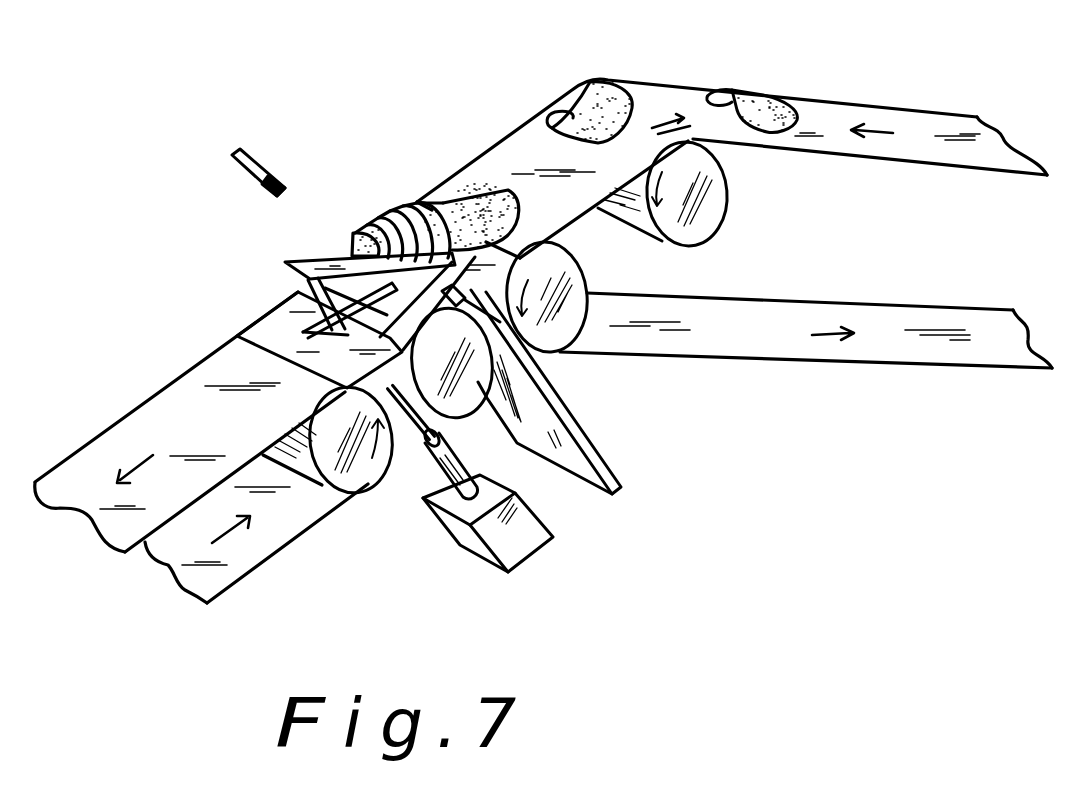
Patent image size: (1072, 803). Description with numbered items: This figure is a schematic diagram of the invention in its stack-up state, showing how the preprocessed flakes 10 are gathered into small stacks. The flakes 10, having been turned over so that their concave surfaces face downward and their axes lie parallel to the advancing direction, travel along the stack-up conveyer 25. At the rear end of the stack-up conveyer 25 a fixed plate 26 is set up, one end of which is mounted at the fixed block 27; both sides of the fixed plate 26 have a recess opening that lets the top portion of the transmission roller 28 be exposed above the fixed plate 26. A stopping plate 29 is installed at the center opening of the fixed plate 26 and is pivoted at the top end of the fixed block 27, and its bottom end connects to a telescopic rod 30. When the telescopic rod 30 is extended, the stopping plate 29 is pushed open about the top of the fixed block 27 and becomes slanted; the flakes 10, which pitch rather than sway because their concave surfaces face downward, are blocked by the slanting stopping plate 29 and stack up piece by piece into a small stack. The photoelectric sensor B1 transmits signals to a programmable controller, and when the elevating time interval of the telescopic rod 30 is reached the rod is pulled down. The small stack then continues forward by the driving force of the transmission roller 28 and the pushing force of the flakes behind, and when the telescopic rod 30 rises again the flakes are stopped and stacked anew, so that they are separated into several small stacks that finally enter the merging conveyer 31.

The flakes 10 is at (737, 90).
The stack-up conveyer 25 is at (524, 162).
The fixed plate 26 is at (278, 336).
The fixed block 27 is at (588, 448).
The transmission roller 28 is at (458, 392).
The stopping plate 29 is at (320, 263).
The telescopic rod 30 is at (412, 415).
The merging conveyer 31 is at (183, 420).
The photoelectric sensor B1 is at (253, 165).